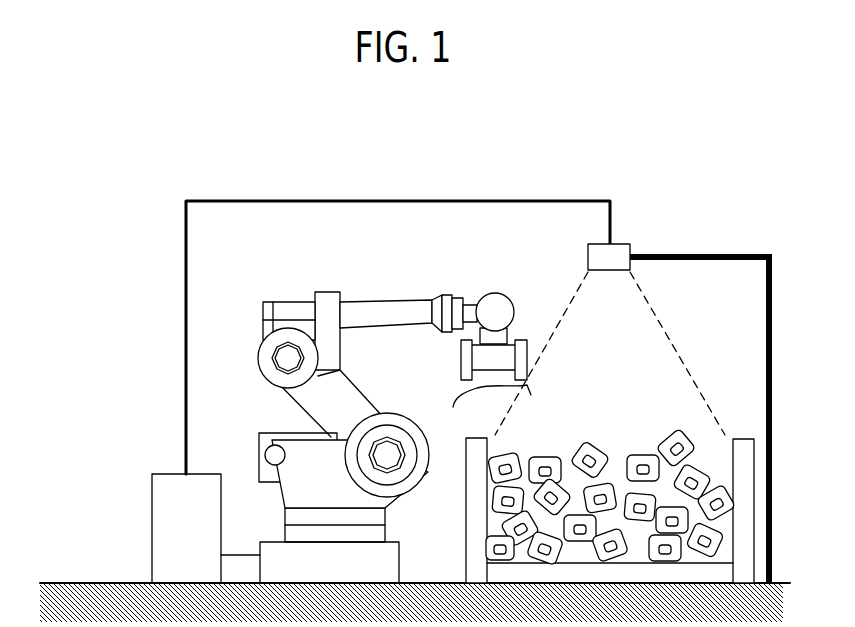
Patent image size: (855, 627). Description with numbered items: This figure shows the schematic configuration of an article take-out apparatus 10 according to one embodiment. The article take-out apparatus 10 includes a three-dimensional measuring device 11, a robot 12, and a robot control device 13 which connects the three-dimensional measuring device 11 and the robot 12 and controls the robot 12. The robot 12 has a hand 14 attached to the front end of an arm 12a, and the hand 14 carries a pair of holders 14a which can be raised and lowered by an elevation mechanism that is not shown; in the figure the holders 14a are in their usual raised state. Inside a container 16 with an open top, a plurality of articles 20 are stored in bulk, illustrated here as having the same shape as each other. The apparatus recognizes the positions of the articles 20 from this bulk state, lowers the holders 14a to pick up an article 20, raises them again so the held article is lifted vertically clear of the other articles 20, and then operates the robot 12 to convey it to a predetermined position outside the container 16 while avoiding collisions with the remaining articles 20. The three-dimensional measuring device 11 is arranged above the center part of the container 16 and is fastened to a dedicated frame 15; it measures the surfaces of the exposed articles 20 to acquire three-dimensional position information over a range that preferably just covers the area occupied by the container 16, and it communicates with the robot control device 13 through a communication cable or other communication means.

The article take-out apparatus 10 is at (118, 282).
The 3D measuring device 11 is at (618, 243).
The robot 12 is at (386, 398).
The arm 12a is at (400, 300).
The robot control device 13 is at (151, 500).
The hand 14 is at (440, 357).
The holders 14a is at (484, 413).
The frame 15 is at (686, 254).
The container 16 is at (738, 438).
The articles 20 is at (695, 445).